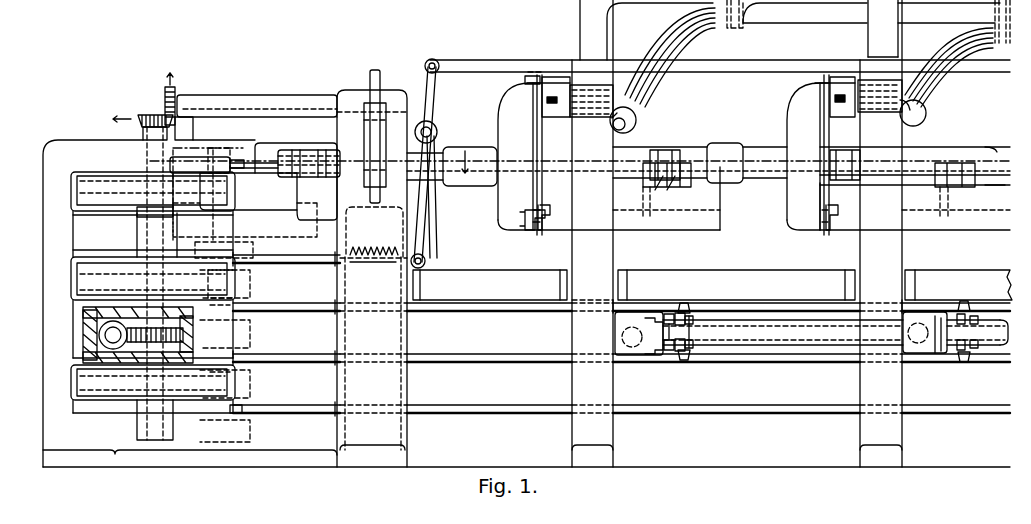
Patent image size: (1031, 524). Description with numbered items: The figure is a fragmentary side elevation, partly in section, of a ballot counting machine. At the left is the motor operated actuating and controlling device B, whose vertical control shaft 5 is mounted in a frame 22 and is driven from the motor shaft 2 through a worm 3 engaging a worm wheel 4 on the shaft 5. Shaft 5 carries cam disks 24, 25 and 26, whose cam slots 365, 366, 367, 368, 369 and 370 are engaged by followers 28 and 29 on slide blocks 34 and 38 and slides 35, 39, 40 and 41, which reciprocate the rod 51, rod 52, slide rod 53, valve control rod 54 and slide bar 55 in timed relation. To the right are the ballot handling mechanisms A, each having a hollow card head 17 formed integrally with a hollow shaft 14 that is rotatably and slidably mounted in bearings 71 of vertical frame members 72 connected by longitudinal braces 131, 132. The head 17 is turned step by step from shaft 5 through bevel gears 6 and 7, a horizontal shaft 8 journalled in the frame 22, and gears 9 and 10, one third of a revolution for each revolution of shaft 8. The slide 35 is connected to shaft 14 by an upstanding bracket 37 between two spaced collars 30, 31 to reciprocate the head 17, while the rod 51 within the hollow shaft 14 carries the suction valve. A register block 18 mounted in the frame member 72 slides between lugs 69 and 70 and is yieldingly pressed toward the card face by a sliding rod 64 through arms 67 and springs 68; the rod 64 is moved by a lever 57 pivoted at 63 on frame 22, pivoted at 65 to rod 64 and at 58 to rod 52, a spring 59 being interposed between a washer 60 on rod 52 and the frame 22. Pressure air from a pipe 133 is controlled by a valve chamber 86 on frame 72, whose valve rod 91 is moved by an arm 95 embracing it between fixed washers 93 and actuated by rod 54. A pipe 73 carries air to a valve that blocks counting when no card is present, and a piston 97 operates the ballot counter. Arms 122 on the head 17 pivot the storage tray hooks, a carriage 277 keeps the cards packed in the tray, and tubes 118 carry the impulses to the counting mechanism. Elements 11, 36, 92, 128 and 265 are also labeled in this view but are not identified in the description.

The motor operated actuating and controlling device B is at (39, 151).
The ballot handling mechanism A is at (575, 26).
The motor shaft 2 is at (74, 358).
The worm 3 is at (82, 337).
The worm wheel 4 is at (190, 333).
The control shaft 5 is at (144, 310).
The bevel gear 6 is at (142, 116).
The bevel gear 7 is at (164, 90).
The shaft 8 is at (276, 90).
The gear 9 is at (370, 76).
The gear 10 is at (368, 200).
The shaft coupling 11 is at (435, 182).
The hollow shaft 14 is at (750, 148).
The card head 17 is at (498, 126).
The register block 18 is at (550, 112).
The frame 22 is at (88, 138).
The cam disk 24 is at (73, 207).
The cam disk 25 is at (75, 262).
The cam disk 26 is at (75, 386).
The follower 28 is at (230, 152).
The follower 29 is at (224, 226).
The collar 30 is at (288, 148).
The collar 31 is at (330, 148).
The slide block 34 is at (242, 176).
The slide 35 is at (276, 206).
The clutch lever 36 is at (228, 205).
The upstanding bracket 37 is at (310, 148).
The slide block 38 is at (242, 282).
The slide 39 is at (234, 311).
The slide 40 is at (234, 382).
The slide 41 is at (234, 413).
The rod 51 is at (272, 168).
The rod 52 is at (332, 272).
The slide rod 53 is at (330, 306).
The valve control rod 54 is at (334, 368).
The slide bar 55 is at (332, 408).
The lever 57 is at (434, 215).
The pivot 58 is at (427, 258).
The spring 59 is at (374, 243).
The washer 60 is at (390, 246).
The pivot 63 is at (438, 128).
The sliding rod 64 is at (488, 60).
The pivot 65 is at (429, 58).
The arm 67 is at (561, 77).
The spring 68 is at (560, 108).
The lug 69 is at (572, 114).
The lug 70 is at (572, 125).
The bearing 71 is at (616, 147).
The vertical frame member 72 is at (615, 395).
The pipe 73 is at (638, 107).
The valve chamber 86 is at (646, 360).
The valve rod 91 is at (664, 292).
The clamp nut 92 is at (673, 317).
The fixed washer 93 is at (693, 319).
The arm 95 is at (692, 311).
The piston 97 is at (638, 117).
The tube 118 is at (661, 86).
The arm 122 is at (524, 77).
The wheel pin 128 is at (636, 129).
The longitudinal brace 131 is at (529, 266).
The longitudinal brace 132 is at (739, 266).
The pipe 133 is at (800, 338).
The latch 265 is at (548, 220).
The carriage 277 is at (676, 186).
The cam slot 365 is at (80, 180).
The cam slot 366 is at (80, 193).
The cam slot 367 is at (80, 276).
The cam groove 368 is at (80, 290).
The cam groove 369 is at (80, 374).
The cam groove 370 is at (112, 420).